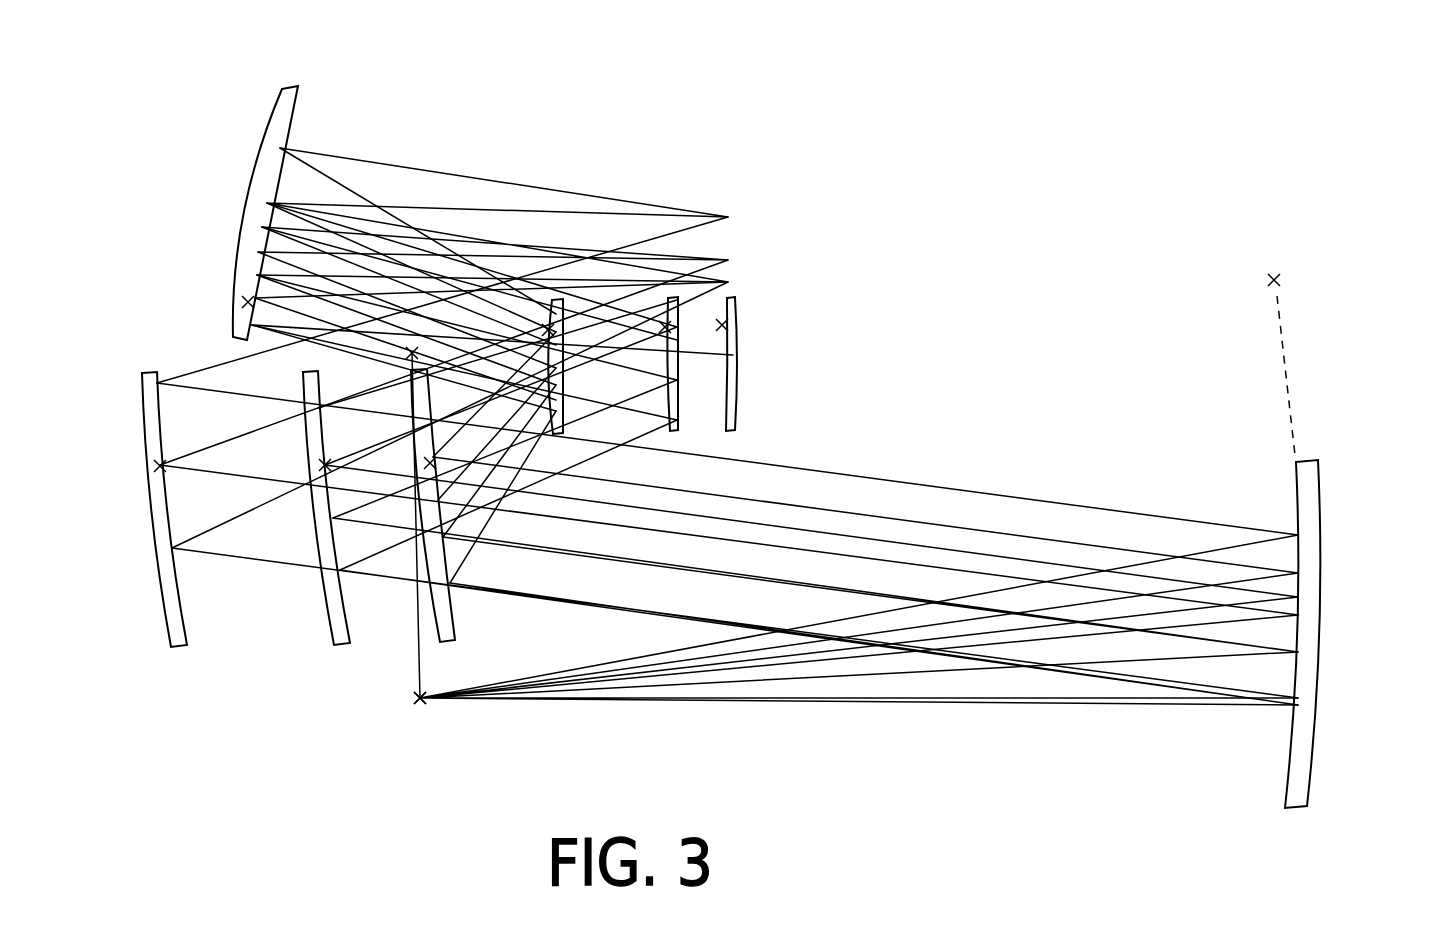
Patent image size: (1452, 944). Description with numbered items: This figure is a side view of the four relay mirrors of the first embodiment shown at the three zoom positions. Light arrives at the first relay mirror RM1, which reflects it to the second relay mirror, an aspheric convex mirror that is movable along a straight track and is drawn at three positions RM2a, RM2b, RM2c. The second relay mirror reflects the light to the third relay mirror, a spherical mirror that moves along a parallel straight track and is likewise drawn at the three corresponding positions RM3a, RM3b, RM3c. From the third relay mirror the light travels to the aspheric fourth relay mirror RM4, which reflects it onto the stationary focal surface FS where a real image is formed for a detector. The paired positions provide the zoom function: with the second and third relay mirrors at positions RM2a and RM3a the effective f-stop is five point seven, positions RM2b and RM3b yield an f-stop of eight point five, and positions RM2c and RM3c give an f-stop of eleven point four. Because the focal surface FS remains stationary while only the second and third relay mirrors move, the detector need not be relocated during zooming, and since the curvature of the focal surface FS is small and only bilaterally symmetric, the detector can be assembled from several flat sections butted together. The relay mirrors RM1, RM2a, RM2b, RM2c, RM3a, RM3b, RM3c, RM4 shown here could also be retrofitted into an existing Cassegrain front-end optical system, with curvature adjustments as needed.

The first relay mirror RM1 is at (297, 87).
The second relay mirror position a RM2a is at (562, 298).
The second relay mirror position b RM2b is at (677, 302).
The second relay mirror position c RM2c is at (735, 373).
The third relay mirror position a RM3a is at (178, 650).
The third relay mirror position b RM3b is at (340, 648).
The third relay mirror position c RM3c is at (447, 645).
The fourth relay mirror RM4 is at (1318, 612).
The focal surface FS is at (418, 704).